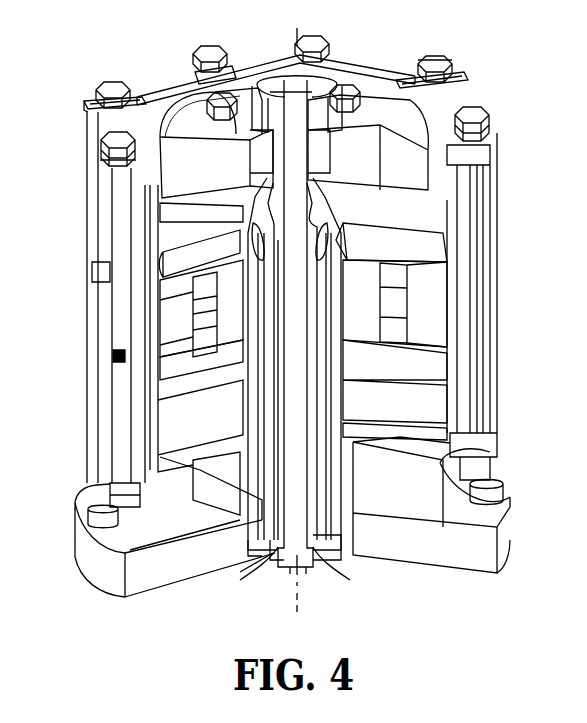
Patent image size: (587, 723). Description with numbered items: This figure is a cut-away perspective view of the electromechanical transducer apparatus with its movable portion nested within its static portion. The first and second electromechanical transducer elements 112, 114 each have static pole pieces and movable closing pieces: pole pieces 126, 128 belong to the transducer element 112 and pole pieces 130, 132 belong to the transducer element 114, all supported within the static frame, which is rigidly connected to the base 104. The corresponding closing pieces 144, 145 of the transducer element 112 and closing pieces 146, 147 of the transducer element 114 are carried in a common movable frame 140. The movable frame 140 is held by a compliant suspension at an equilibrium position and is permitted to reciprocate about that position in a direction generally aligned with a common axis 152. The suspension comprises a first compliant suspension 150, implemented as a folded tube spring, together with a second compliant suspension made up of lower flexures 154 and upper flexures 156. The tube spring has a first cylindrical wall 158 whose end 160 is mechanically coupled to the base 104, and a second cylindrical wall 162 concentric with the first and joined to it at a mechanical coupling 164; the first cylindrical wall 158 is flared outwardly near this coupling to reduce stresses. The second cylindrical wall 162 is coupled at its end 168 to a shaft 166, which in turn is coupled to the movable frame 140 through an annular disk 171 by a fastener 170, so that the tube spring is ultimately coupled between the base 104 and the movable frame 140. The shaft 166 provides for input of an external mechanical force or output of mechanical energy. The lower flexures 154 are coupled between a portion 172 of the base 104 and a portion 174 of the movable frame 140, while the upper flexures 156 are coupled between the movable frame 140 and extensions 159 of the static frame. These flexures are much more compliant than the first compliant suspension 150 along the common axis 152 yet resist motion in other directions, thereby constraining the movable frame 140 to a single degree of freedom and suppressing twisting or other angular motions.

The base 104 is at (98, 565).
The first electromechanical transducer element 112 is at (160, 407).
The second electromechanical transducer element 114 is at (430, 222).
The pole piece 126 is at (113, 356).
The pole piece 128 is at (160, 326).
The pole piece 130 is at (423, 322).
The pole piece 132 is at (365, 296).
The movable frame 140 is at (498, 229).
The closing piece 144 is at (157, 298).
The closing piece 145 is at (160, 373).
The closing piece 146 is at (430, 262).
The closing piece 147 is at (440, 360).
The first compliant suspension 150 is at (320, 548).
The common axis 152 is at (298, 616).
The lower flexures 154 is at (173, 455).
The upper flexures 156 is at (160, 85).
The first cylindrical wall 158 is at (93, 272).
The extensions 159 is at (88, 150).
The end 160 is at (268, 557).
The second cylindrical wall 162 is at (240, 241).
The mechanical coupling 164 is at (243, 206).
The shaft 166 is at (282, 80).
The end 168 is at (283, 555).
The fastener 170 is at (253, 78).
The annular disk 171 is at (183, 130).
The portion of the base 172 is at (397, 437).
The portion of the movable frame 174 is at (507, 517).